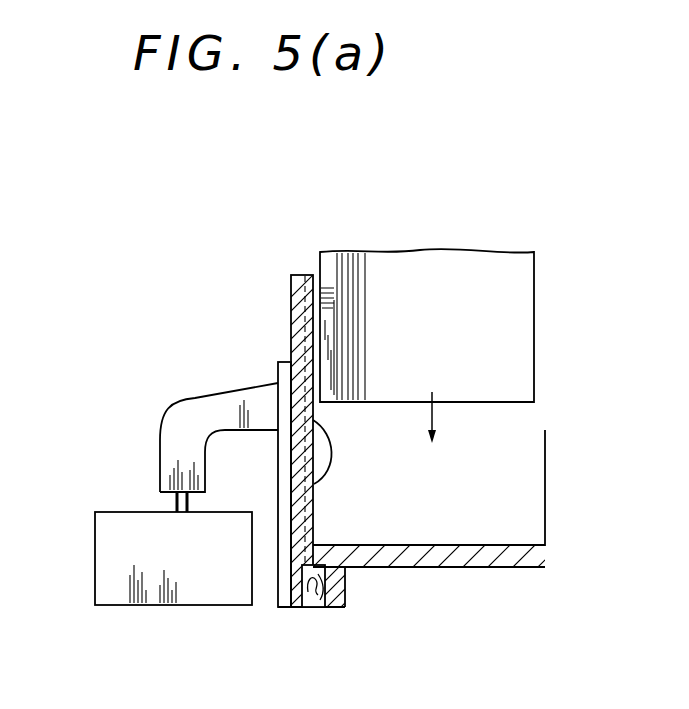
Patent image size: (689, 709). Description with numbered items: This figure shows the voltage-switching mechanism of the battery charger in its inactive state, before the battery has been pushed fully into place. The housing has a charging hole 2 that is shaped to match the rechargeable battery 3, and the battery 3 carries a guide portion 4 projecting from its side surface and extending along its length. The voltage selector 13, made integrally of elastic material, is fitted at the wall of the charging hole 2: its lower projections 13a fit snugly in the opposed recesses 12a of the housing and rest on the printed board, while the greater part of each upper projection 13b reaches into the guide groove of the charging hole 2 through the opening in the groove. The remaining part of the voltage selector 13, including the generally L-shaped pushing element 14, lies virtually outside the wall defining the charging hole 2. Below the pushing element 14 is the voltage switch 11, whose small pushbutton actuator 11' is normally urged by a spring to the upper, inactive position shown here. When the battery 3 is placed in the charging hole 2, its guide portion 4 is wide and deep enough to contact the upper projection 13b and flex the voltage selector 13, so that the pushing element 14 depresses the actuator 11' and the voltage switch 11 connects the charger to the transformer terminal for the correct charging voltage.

The charging hole 2 is at (513, 456).
The battery 3 is at (486, 277).
The guide portion 4 is at (327, 280).
The voltage switch 11 is at (136, 558).
The actuator 11' is at (125, 471).
The recesses 12a is at (340, 608).
The voltage selector 13 is at (200, 374).
The lower projections 13a is at (310, 609).
The upper projections 13b is at (323, 467).
The pushing element 14 is at (192, 410).